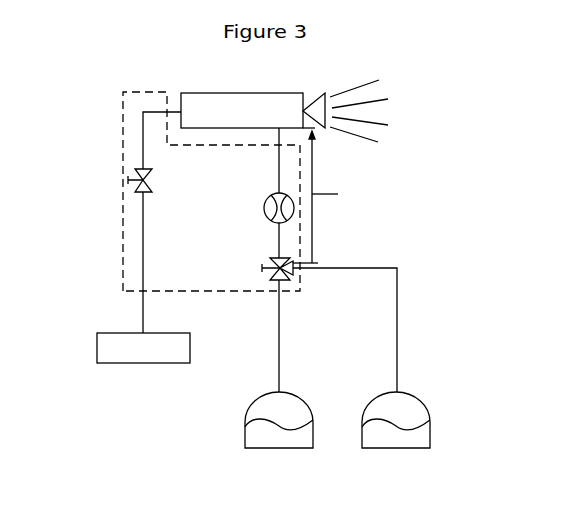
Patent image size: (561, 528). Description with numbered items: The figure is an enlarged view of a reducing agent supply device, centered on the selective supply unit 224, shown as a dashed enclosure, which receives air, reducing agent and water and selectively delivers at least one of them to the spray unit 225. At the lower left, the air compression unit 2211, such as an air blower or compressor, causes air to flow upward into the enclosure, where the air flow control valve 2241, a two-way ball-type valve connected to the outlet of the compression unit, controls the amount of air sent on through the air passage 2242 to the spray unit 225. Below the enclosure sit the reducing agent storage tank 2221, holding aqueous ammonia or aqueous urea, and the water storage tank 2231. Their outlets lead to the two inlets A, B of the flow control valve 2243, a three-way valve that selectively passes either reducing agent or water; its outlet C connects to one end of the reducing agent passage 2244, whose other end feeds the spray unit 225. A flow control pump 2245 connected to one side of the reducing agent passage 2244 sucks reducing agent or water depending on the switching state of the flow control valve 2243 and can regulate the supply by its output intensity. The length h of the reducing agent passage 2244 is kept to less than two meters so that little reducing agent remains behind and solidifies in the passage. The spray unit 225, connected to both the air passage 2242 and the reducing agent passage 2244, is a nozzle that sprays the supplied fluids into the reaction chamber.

The selective supply unit 224 is at (137, 92).
The spray unit 225 is at (207, 102).
The air passage 2242 is at (143, 142).
The air flow control valve 2241 is at (137, 173).
The flow control valve 2243 is at (264, 284).
The reducing agent passage 2244 is at (280, 153).
The flow control pump 2245 is at (264, 210).
The air compression unit 2211 is at (97, 348).
The reducing agent storage tank 2221 is at (250, 440).
The water storage tank 2231 is at (425, 440).
The inlet A is at (284, 272).
The inlet B is at (296, 262).
The outlet C is at (272, 260).
The length h is at (331, 194).